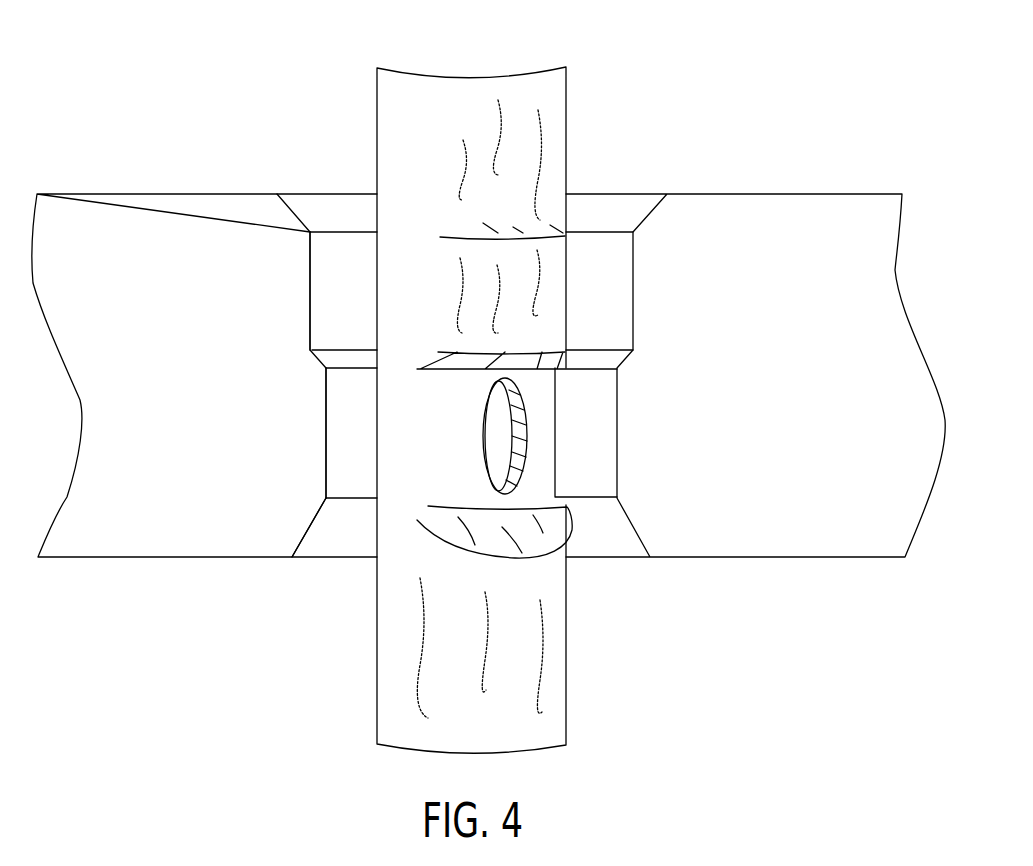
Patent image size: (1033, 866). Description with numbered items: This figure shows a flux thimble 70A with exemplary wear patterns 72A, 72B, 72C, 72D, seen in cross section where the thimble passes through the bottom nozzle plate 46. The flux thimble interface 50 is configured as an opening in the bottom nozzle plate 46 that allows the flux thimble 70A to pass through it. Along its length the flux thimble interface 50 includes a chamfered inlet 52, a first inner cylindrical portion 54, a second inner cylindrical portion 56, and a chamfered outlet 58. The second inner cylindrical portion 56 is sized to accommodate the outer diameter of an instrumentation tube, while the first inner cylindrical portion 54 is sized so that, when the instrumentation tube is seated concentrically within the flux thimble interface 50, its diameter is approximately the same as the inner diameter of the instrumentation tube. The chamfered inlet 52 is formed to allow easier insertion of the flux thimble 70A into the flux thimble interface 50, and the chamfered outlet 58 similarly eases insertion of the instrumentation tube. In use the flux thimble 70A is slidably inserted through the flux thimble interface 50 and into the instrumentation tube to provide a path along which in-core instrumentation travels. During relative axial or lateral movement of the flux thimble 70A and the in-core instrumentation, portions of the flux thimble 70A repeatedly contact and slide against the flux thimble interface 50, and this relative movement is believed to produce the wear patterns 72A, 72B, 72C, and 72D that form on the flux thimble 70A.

The bottom nozzle plate 46 is at (737, 194).
The flux thimble interface 50 is at (346, 592).
The chamfered inlet 52 is at (293, 560).
The first inner cylindrical portion 54 is at (325, 458).
The second inner cylindrical portion 56 is at (310, 290).
The chamfered outlet 58 is at (282, 208).
The flux thimble 70A is at (377, 80).
The wear pattern 72A is at (553, 560).
The wear pattern 72B is at (520, 458).
The wear pattern 72C is at (525, 352).
The wear pattern 72D is at (535, 237).